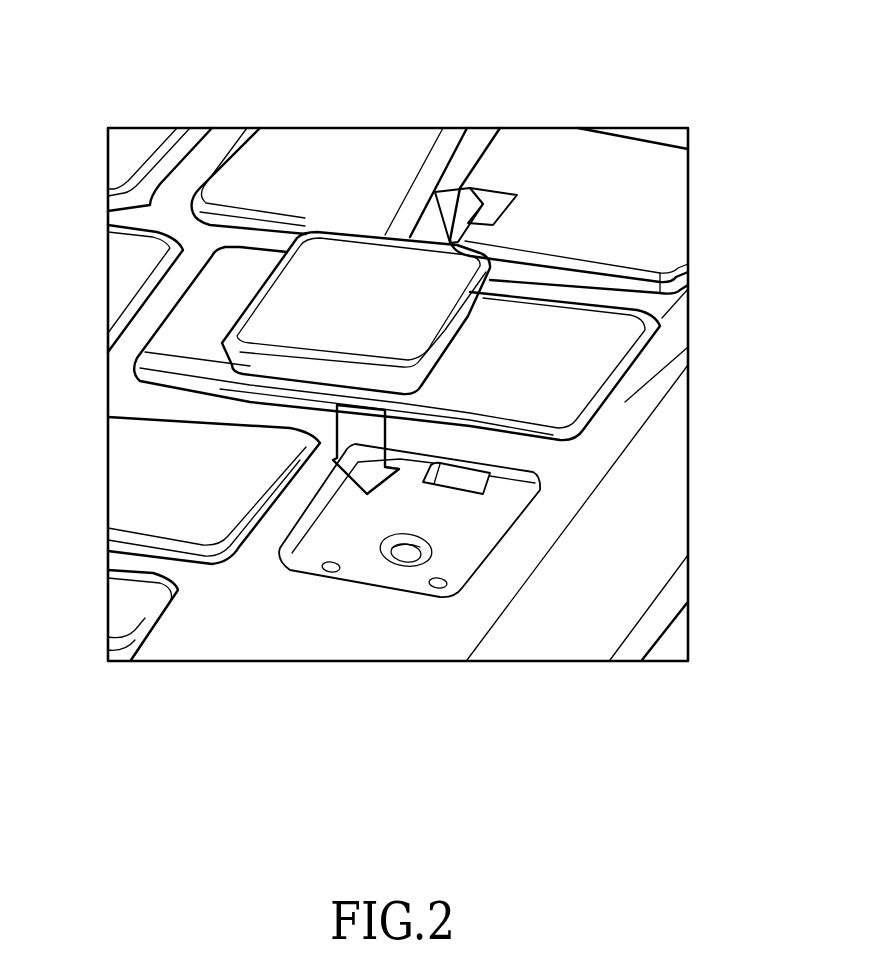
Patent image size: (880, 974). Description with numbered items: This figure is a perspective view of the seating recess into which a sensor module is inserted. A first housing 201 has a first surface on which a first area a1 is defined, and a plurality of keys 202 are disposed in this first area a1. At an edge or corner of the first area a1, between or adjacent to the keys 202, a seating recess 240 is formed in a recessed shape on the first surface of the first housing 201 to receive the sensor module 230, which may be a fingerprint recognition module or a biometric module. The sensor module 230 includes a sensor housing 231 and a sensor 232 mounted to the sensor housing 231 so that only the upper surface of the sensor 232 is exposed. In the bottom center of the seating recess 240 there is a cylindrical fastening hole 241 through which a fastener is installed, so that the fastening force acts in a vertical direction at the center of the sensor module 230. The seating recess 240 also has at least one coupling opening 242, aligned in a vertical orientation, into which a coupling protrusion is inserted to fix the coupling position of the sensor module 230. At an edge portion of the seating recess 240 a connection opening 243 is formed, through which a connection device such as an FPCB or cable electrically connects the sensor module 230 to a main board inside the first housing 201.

The first housing 201 is at (218, 635).
The keys 202 is at (130, 477).
The sensor module 230 is at (272, 226).
The sensor housing 231 is at (242, 385).
The sensor 232 is at (290, 294).
The seating recess 240 is at (494, 613).
The fastening hole 241 is at (377, 542).
The coupling opening 242 is at (327, 563).
The connection opening 243 is at (465, 480).
The first area a1 is at (557, 507).